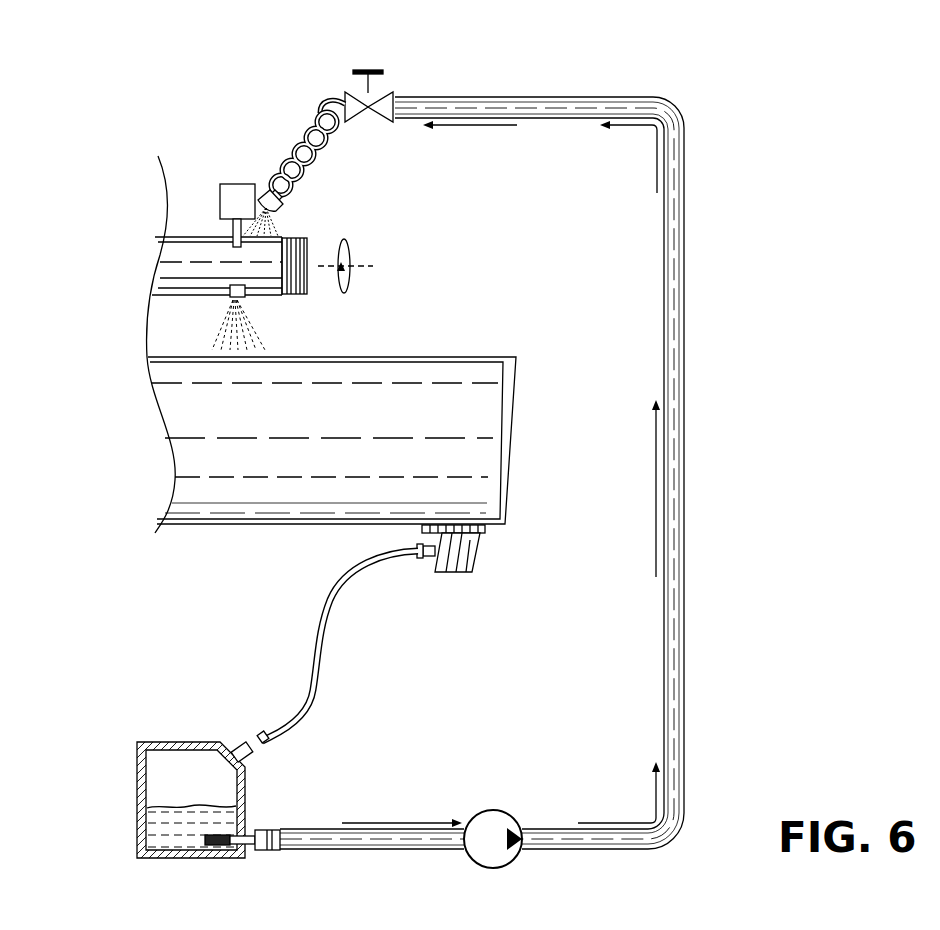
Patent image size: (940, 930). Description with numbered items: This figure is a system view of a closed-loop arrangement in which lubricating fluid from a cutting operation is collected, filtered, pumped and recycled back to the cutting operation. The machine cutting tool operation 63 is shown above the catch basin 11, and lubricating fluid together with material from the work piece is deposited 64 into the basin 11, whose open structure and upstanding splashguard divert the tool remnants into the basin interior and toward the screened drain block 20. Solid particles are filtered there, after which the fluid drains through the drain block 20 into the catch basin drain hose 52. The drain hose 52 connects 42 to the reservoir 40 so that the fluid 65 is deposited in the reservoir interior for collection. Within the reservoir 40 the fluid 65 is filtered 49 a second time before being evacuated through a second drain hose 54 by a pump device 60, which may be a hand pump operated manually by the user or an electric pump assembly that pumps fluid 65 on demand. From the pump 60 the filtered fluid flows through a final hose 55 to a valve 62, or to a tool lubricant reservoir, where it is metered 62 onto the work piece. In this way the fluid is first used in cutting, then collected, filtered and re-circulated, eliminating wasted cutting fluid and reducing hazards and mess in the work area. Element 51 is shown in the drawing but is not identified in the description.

The catch basin 11 is at (536, 420).
The screened drain block 20 is at (476, 555).
The reservoir 40 is at (104, 740).
The drain hose connection 42 is at (230, 740).
The second filter 49 is at (212, 848).
The outlet fitting 51 is at (273, 806).
The catch basin drain hose 52 is at (312, 630).
The second drain hose 54 is at (367, 830).
The final hose 55 is at (685, 407).
The pump device 60 is at (485, 797).
The valve 62 is at (253, 155).
The machine cutting tool operation 63 is at (327, 223).
The deposited fluid and material 64 is at (258, 330).
The fluid 65 is at (150, 824).